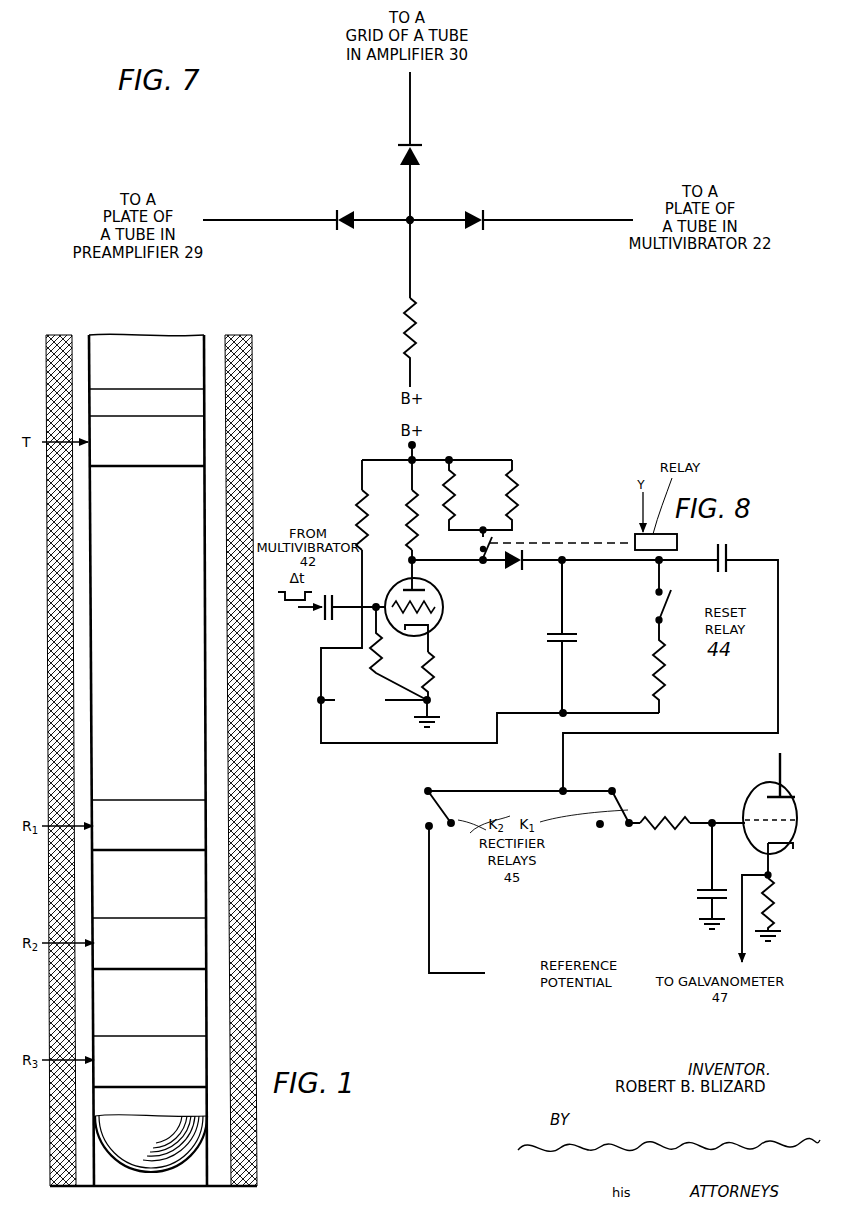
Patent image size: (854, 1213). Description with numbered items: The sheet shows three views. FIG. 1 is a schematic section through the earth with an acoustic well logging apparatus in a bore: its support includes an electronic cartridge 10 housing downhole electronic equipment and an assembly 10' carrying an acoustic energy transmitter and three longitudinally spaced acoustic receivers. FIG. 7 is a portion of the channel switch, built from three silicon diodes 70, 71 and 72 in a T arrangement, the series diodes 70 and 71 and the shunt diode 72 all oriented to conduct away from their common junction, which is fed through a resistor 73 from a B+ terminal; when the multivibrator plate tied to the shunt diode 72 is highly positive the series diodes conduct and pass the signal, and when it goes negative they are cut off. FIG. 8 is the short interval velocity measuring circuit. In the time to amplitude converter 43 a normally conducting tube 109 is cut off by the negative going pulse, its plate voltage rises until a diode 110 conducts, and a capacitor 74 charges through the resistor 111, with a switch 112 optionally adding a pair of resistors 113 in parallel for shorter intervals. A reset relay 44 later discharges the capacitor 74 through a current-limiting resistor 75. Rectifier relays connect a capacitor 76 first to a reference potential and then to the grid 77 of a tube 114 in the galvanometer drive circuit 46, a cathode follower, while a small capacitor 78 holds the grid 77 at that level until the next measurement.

In FIG. 1, the electronic cartridge 10 is at (170, 760).
In FIG. 1, the assembly 10' is at (197, 913).
In FIG. 7, the silicon diode 70 is at (351, 233).
In FIG. 7, the silicon diode 71 is at (400, 156).
In FIG. 7, the shunt diode 72 is at (476, 212).
In FIG. 7, the resistor 73 is at (424, 336).
In FIG. 8, the tube 109 is at (443, 615).
In FIG. 8, the diode 110 is at (526, 566).
In FIG. 8, the resistor 111 is at (412, 548).
In FIG. 8, the switch 112 is at (500, 547).
In FIG. 8, the pair of resistors 113 is at (512, 494).
In FIG. 8, the time to amplitude converter 43 is at (583, 514).
In FIG. 8, the capacitor 74 is at (574, 636).
In FIG. 8, the resistor 75 is at (668, 690).
In FIG. 8, the capacitor 76 is at (730, 552).
In FIG. 8, the reset relay 44 is at (674, 604).
In FIG. 8, the tube 114 is at (768, 786).
In FIG. 8, the galvanometer drive circuit 46 is at (803, 756).
In FIG. 8, the grid 77 is at (758, 820).
In FIG. 8, the capacitor 78 is at (704, 890).